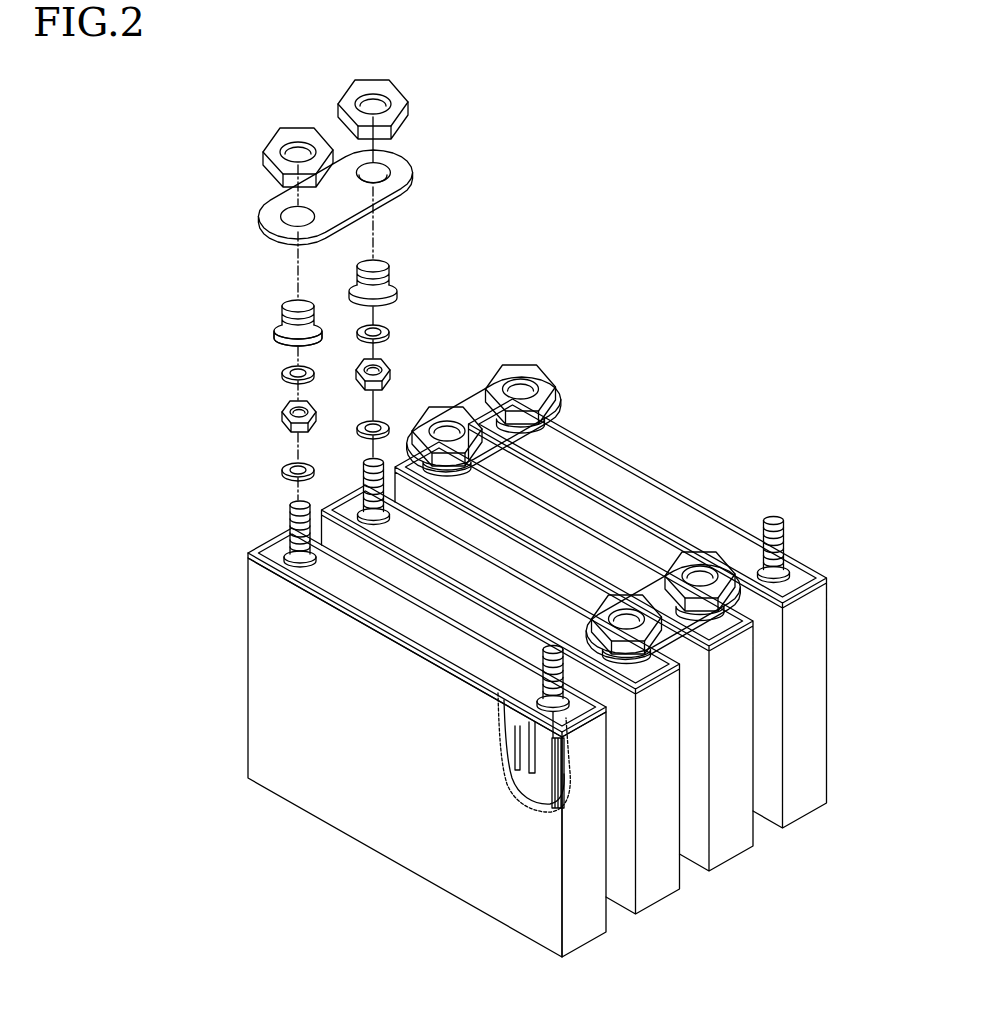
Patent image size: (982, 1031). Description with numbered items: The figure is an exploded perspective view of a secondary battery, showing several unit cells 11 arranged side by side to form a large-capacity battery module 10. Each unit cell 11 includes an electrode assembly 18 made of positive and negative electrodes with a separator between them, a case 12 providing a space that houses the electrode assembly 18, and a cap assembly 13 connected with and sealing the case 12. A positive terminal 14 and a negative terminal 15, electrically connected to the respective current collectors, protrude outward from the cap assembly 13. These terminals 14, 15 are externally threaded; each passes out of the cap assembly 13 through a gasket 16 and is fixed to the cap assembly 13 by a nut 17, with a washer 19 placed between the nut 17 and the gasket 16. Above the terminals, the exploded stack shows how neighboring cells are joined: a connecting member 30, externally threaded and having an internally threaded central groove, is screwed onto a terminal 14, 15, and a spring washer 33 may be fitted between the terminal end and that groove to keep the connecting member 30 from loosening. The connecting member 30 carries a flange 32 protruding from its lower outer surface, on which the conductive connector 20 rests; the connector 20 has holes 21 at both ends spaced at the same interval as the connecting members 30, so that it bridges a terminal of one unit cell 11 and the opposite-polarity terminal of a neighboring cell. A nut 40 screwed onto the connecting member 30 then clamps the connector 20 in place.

The battery module 10 is at (650, 446).
The unit cell 11 is at (606, 937).
The case 12 is at (306, 797).
The cap assembly 13 is at (430, 630).
The positive terminal 14 is at (289, 527).
The negative terminal 15 is at (366, 493).
The gasket 16 is at (247, 557).
The nut 17 is at (282, 420).
The electrode assembly 18 is at (514, 766).
The washer 19 is at (283, 470).
The connector 20 is at (272, 216).
The hole 21 is at (411, 178).
The connecting member 30 is at (280, 321).
The flange 32 is at (279, 338).
The spring washer 33 is at (283, 374).
The nut 40 is at (283, 139).